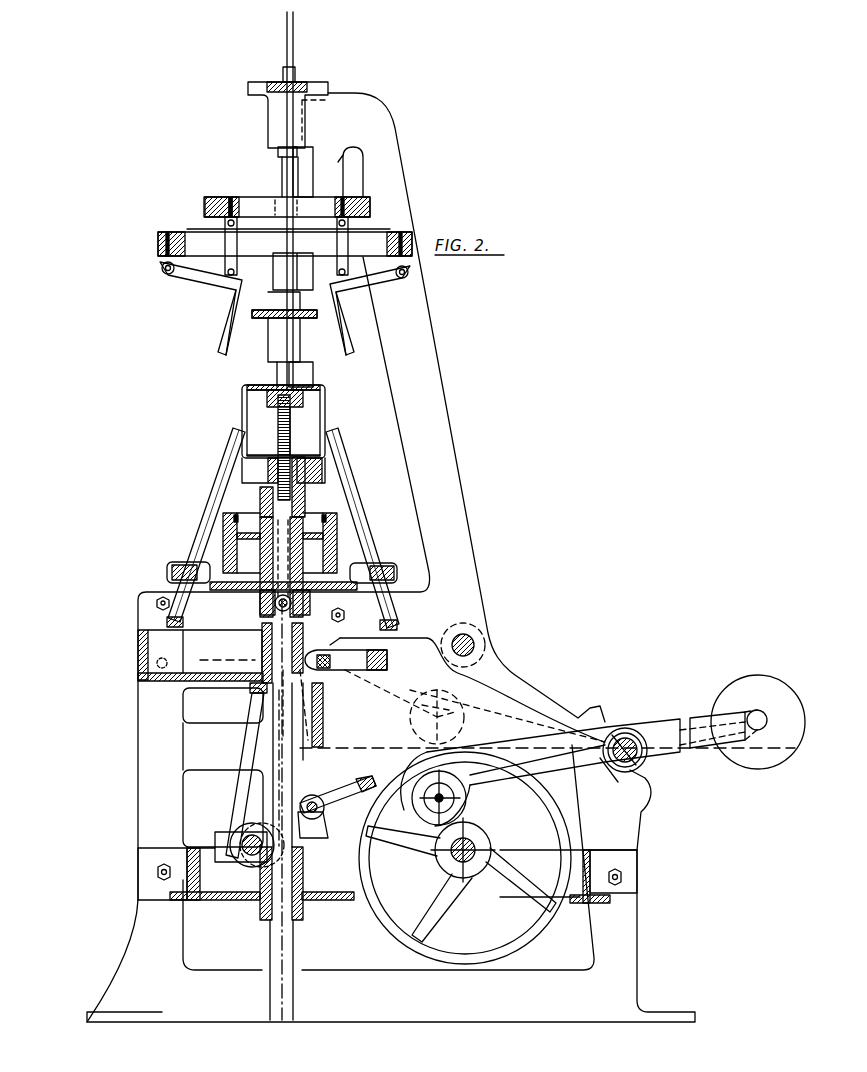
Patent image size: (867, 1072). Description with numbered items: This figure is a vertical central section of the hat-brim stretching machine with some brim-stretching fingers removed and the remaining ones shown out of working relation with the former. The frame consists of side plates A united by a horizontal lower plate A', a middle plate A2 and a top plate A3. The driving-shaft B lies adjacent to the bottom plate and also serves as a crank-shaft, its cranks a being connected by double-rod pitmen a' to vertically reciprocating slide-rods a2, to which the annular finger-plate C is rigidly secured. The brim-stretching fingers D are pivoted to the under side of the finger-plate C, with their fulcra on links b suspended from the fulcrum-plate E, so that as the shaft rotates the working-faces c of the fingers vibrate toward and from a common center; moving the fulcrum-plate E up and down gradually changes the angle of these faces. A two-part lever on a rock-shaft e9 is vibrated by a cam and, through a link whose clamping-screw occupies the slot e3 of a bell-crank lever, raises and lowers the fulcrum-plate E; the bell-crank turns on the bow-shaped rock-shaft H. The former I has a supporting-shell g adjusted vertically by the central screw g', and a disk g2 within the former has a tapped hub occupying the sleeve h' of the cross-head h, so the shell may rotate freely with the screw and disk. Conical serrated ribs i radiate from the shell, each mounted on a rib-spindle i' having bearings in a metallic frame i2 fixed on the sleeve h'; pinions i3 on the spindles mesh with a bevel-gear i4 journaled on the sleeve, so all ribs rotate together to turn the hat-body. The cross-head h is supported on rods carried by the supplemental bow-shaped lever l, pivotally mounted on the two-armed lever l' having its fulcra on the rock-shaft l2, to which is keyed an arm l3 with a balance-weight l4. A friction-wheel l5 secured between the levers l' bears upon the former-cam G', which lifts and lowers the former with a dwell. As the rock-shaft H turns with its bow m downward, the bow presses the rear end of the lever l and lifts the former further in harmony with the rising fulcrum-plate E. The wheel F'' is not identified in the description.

The side plates A is at (441, 557).
The lower plate A' is at (387, 810).
The middle plate A2 is at (200, 655).
The top plate A3 is at (288, 104).
The driving-shaft B is at (228, 866).
The finger-plate C is at (285, 295).
The brim-stretching fingers D is at (285, 308).
The fulcrum-plate E is at (287, 198).
The hand wheel F'' is at (465, 858).
The former-cam G' is at (464, 858).
The bow-shaped rock-shaft H is at (323, 663).
The former I is at (272, 434).
The cranks a is at (241, 837).
The double-rod pitmen a' is at (264, 764).
The slide-rods a2 is at (278, 380).
The links b is at (292, 246).
The working-faces c is at (286, 322).
The slot e3 is at (282, 175).
The rock-shaft e9 is at (463, 634).
The supporting-shell g is at (294, 447).
The adjusting screw g' is at (302, 431).
The disk g2 is at (283, 447).
The cross-head h is at (274, 600).
The sleeve h' is at (291, 487).
The ribs i is at (283, 529).
The rib-spindles i' is at (285, 537).
The metallic frame i2 is at (215, 545).
The pinions i3 is at (172, 562).
The bevel-gear i4 is at (218, 590).
The supplemental bow-shaped lever l is at (337, 802).
The two-armed lever l' is at (506, 790).
The rock-shaft l2 is at (628, 738).
The arm l3 is at (710, 721).
The balance-weight l4 is at (758, 722).
The friction-wheel l5 is at (439, 794).
The bow m is at (388, 655).